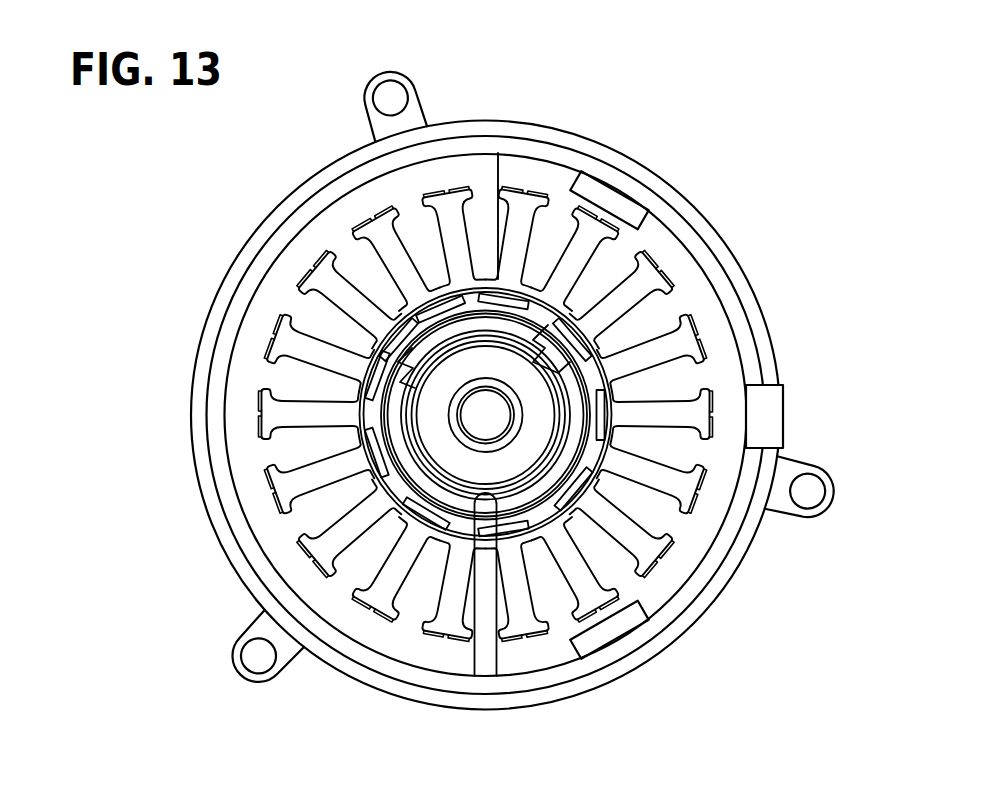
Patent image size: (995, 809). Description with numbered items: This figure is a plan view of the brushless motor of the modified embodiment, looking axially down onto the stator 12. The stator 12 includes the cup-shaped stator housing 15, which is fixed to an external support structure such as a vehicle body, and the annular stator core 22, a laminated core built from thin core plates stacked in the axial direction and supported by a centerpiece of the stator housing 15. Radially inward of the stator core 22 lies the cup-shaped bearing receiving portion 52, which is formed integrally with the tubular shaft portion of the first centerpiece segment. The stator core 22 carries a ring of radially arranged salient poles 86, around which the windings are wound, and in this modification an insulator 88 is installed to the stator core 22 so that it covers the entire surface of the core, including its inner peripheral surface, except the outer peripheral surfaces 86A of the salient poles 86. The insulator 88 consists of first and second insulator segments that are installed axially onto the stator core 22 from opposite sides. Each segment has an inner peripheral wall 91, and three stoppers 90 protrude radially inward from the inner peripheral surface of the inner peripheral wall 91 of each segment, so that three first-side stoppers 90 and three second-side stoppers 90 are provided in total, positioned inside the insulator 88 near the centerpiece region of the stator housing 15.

The stator 12 is at (538, 188).
The stator housing 15 is at (588, 706).
The stator core 22 is at (302, 648).
The bearing receiving portion 52 is at (563, 387).
The salient poles 86 is at (460, 640).
The outer peripheral surfaces 86A is at (420, 633).
The insulator 88 is at (380, 617).
The stoppers 90 is at (412, 350).
The inner peripheral wall 91 is at (610, 400).